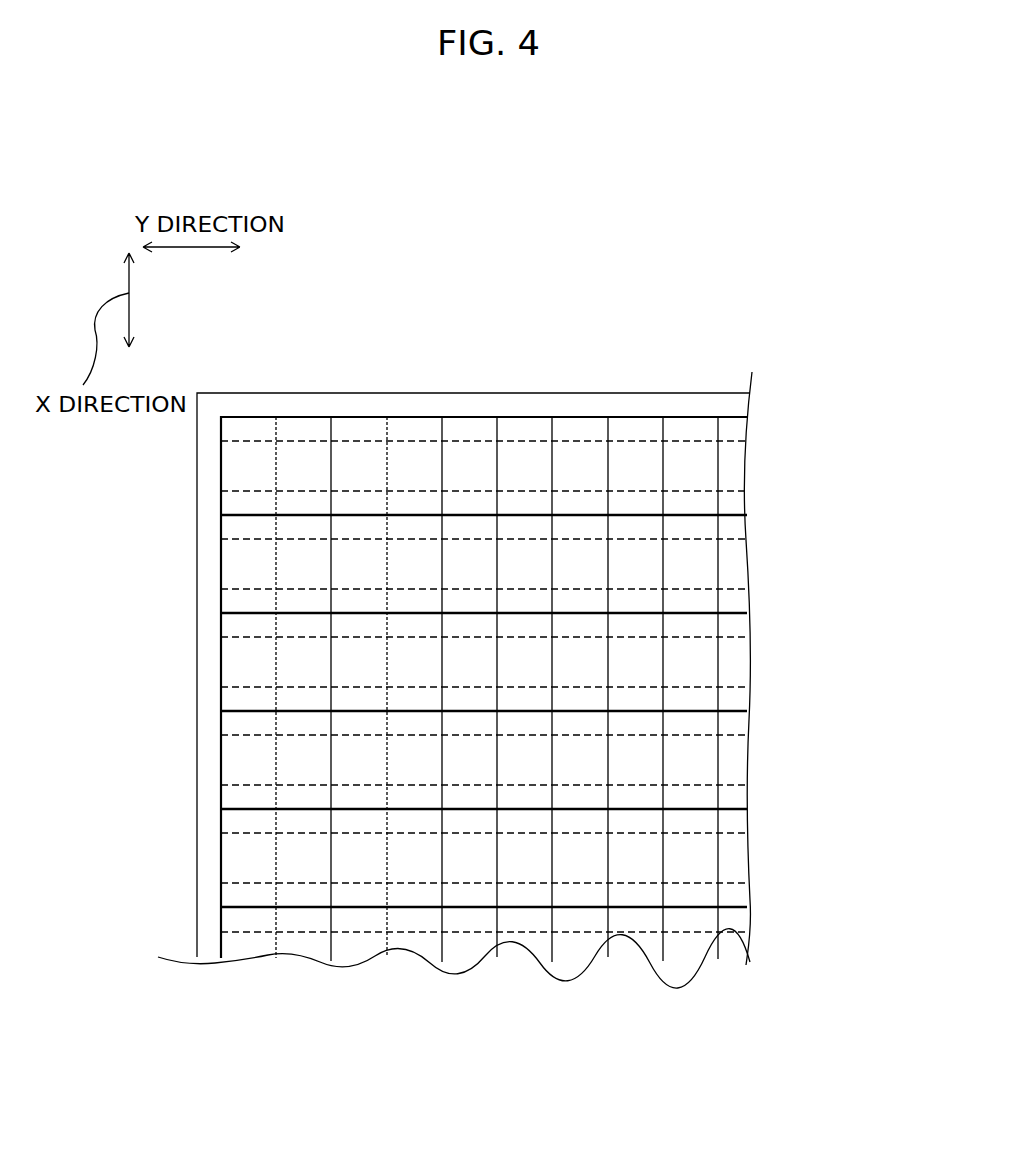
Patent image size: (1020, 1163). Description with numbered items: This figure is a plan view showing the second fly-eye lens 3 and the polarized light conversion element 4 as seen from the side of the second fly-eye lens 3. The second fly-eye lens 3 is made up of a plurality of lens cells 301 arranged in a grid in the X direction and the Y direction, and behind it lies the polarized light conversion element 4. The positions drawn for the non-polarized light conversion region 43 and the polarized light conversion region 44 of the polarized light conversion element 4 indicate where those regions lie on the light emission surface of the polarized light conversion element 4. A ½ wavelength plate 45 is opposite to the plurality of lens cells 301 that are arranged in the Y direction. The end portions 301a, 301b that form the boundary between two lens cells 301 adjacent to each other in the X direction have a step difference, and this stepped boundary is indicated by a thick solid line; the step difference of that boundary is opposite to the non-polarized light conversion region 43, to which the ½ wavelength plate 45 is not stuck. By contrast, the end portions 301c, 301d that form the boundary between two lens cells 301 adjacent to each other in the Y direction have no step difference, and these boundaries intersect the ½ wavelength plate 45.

The second fly-eye lens 3 is at (533, 417).
The polarized light conversion element 4 is at (632, 393).
The lens cell 301 is at (247, 455).
The end portion 301a is at (738, 517).
The end portion 301b is at (738, 615).
The end portion 301c is at (277, 431).
The end portion 301d is at (332, 431).
The non-polarized light conversion region 43 is at (742, 503).
The polarized light conversion region 44 is at (745, 448).
The ½ wavelength plate 45 is at (742, 466).